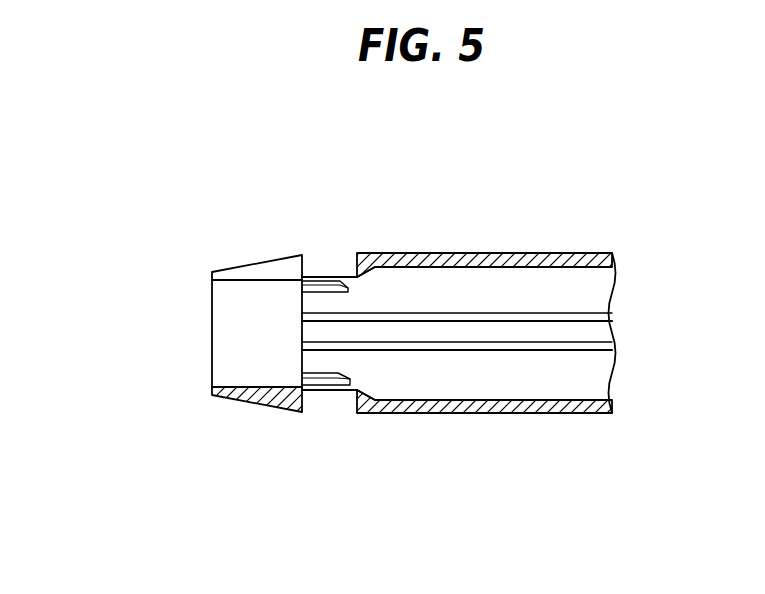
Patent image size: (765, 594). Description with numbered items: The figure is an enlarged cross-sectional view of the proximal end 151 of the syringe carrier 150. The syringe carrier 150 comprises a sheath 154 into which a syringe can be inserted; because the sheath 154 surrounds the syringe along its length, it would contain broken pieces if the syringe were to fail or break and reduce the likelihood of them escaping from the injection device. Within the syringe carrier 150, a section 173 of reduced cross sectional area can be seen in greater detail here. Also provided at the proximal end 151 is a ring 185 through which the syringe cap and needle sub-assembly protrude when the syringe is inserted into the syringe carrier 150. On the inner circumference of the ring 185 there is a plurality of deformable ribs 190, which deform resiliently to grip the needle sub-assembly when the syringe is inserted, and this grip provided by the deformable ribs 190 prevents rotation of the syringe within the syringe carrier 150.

The syringe carrier 150 is at (462, 312).
The proximal end 151 is at (415, 333).
The sheath 154 is at (578, 252).
The section of reduced cross sectional area 173 is at (356, 276).
The ring 185 is at (258, 268).
The deformable ribs 190 is at (320, 279).